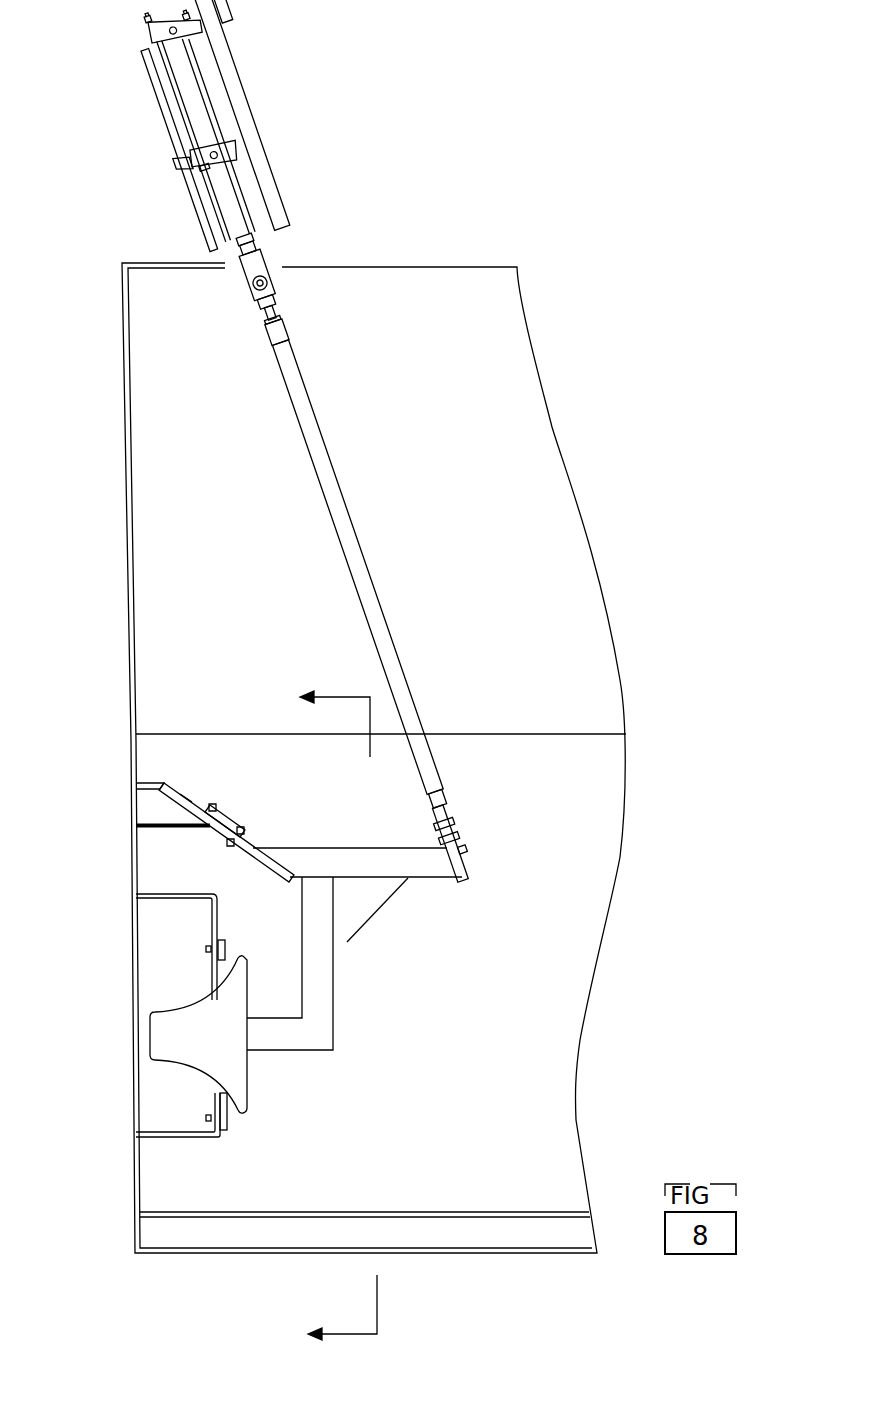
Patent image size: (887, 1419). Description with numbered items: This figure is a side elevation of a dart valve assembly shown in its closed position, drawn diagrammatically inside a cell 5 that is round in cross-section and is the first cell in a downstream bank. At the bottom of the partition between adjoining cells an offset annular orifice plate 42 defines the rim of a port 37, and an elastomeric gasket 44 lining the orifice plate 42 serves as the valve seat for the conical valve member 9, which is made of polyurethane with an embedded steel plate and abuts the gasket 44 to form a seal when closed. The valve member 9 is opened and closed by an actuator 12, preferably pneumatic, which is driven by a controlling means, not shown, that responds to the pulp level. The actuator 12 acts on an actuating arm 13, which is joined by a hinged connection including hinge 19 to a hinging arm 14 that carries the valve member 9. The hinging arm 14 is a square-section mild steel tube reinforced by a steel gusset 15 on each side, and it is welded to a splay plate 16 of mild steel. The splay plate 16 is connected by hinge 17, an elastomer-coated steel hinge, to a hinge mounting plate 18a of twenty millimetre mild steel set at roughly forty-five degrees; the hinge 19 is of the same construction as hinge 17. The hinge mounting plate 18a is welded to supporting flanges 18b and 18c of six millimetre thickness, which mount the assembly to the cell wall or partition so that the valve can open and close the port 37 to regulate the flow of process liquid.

The cell 5 is at (98, 554).
The valve member 9 is at (157, 1035).
The actuator 12 is at (195, 122).
The actuating arm 13 is at (345, 525).
The hinging arm 14 is at (333, 1022).
The gusset 15 is at (368, 905).
The splay plate 16 is at (268, 866).
The hinge 17 is at (222, 812).
The hinge mounting plate 18a is at (187, 800).
The supporting flange 18b is at (160, 787).
The supporting flange 18c is at (160, 830).
The hinge 19 is at (472, 838).
The port 37 is at (195, 1100).
The orifice plate 42 is at (207, 925).
The gasket 44 is at (222, 1125).